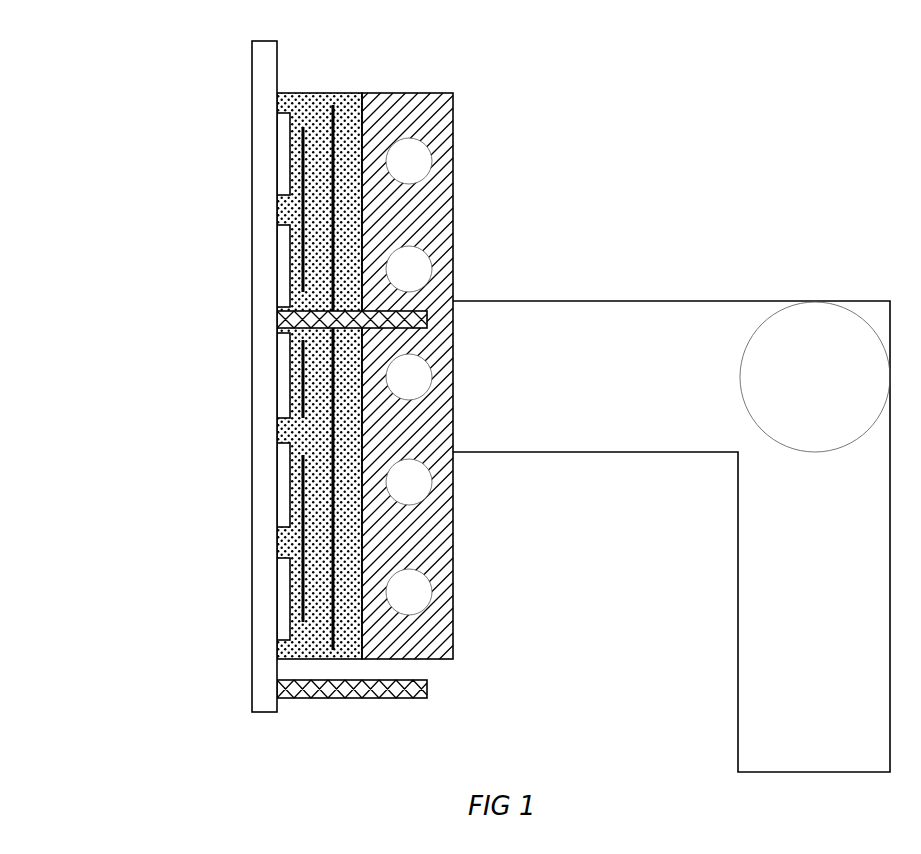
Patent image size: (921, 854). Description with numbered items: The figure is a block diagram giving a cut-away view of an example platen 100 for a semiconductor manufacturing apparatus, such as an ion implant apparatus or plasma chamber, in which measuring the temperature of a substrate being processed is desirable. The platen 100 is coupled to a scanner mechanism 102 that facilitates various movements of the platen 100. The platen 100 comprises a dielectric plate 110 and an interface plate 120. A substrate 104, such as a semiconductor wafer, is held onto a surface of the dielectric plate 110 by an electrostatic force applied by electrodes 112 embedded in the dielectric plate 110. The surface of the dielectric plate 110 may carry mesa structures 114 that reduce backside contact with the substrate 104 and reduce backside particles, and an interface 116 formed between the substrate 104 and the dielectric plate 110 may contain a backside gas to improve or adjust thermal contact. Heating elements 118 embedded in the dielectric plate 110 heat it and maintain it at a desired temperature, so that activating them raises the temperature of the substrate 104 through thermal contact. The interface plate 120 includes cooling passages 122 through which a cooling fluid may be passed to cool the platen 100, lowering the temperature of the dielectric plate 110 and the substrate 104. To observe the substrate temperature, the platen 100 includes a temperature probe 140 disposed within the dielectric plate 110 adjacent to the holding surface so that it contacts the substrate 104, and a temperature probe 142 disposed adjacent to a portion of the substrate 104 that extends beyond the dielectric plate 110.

The platen 100 is at (628, 141).
The scanner mechanism 102 is at (671, 536).
The substrate 104 is at (262, 478).
The dielectric plate 110 is at (312, 106).
The electrodes 112 is at (303, 220).
The mesa structures 114 is at (290, 545).
The interface 116 is at (283, 168).
The heating elements 118 is at (333, 640).
The interface plate 120 is at (418, 105).
The cooling passages 122 is at (400, 590).
The temperature probe 140 is at (418, 310).
The temperature probe 142 is at (370, 689).